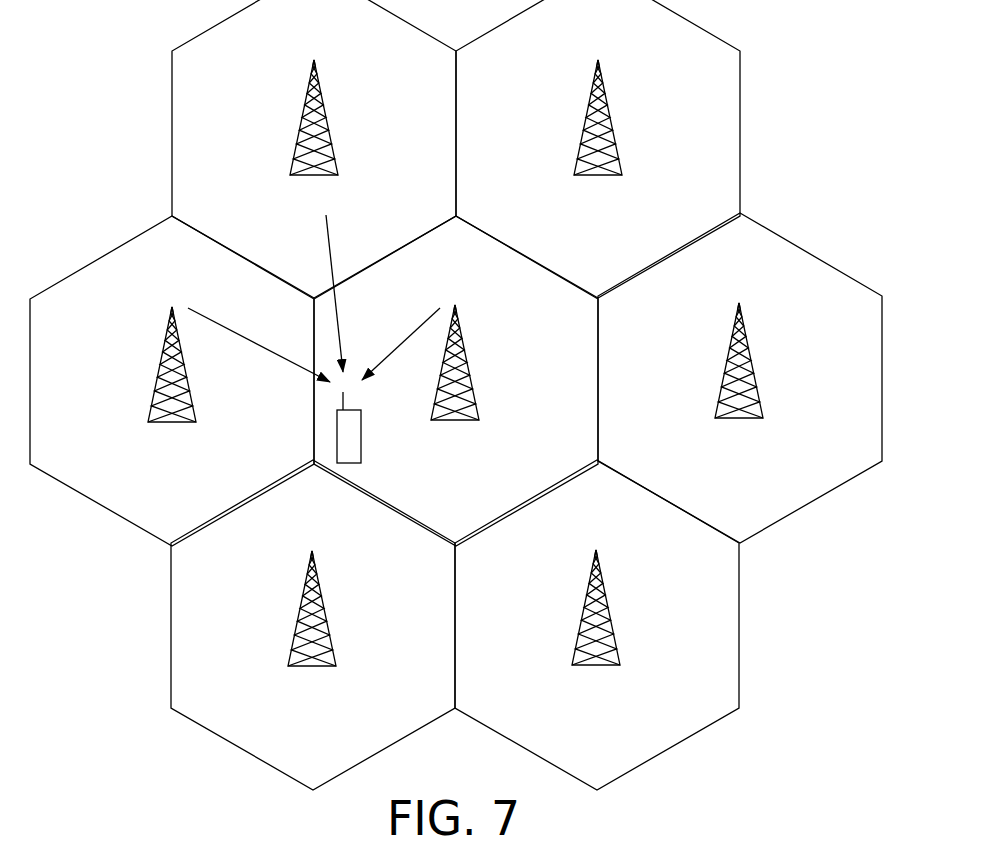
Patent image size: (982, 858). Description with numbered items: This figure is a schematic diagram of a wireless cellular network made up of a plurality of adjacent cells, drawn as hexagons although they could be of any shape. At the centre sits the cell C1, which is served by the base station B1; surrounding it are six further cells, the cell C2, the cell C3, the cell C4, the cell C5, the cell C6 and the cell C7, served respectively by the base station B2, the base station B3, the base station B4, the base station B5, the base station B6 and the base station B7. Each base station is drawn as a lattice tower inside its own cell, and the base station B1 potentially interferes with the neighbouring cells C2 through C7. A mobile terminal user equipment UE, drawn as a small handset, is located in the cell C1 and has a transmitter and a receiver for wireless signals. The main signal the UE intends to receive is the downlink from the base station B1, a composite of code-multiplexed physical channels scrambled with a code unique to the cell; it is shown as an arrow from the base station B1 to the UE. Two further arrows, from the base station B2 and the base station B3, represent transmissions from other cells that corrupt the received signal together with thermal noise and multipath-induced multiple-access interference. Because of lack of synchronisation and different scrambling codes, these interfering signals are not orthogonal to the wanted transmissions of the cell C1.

The cell C1 is at (456, 381).
The cell C2 is at (314, 149).
The cell C3 is at (172, 381).
The cell C4 is at (313, 625).
The cell C5 is at (597, 625).
The cell C6 is at (740, 378).
The cell C7 is at (598, 149).
The base station B1 is at (455, 379).
The base station B2 is at (314, 134).
The base station B3 is at (172, 380).
The base station B4 is at (312, 624).
The base station B5 is at (596, 624).
The base station B6 is at (739, 377).
The base station B7 is at (598, 133).